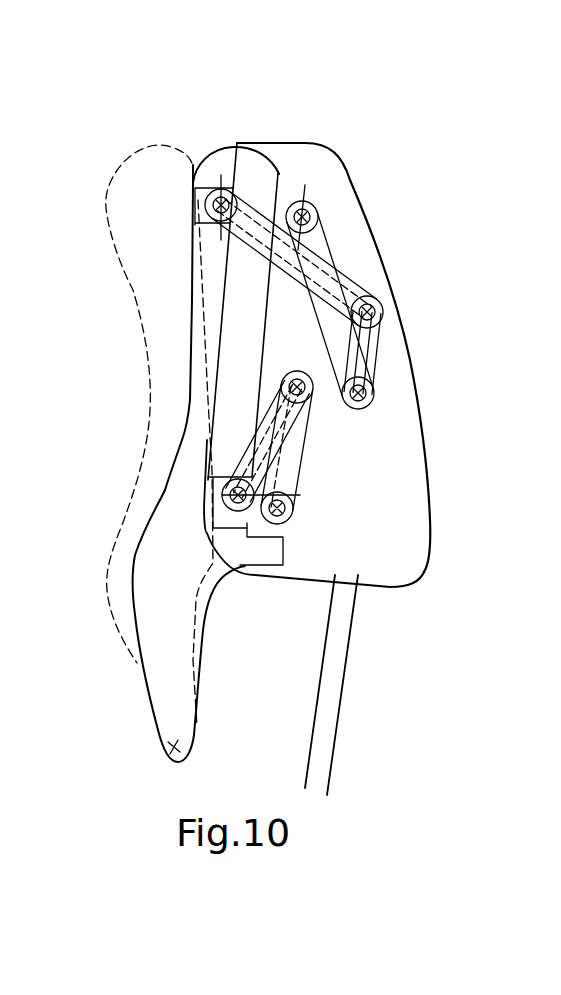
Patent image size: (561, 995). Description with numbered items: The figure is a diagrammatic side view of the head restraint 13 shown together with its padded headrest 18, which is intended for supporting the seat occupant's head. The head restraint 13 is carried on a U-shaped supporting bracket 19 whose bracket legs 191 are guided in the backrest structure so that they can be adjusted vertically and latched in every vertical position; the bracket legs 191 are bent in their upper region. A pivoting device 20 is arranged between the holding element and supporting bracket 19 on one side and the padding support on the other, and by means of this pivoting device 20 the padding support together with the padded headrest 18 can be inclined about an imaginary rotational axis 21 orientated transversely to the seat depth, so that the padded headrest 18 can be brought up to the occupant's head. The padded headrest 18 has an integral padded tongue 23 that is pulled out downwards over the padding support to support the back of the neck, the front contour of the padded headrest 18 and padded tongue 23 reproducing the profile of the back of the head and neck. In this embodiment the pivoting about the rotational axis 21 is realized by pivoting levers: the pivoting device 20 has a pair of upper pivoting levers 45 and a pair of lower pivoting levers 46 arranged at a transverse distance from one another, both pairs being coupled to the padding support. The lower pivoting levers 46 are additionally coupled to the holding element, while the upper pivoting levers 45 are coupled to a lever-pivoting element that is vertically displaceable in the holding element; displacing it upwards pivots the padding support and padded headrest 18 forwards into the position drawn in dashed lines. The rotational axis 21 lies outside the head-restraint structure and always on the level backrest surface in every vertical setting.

The head restraint 13 is at (353, 162).
The padded headrest 18 is at (225, 168).
The supporting bracket 19 is at (402, 685).
The bracket legs 191 is at (337, 703).
The pivoting device 20 is at (325, 413).
The rotational axis 21 is at (163, 745).
The padded tongue 23 is at (173, 658).
The upper pivoting levers 45 is at (322, 245).
The lower pivoting levers 46 is at (297, 458).